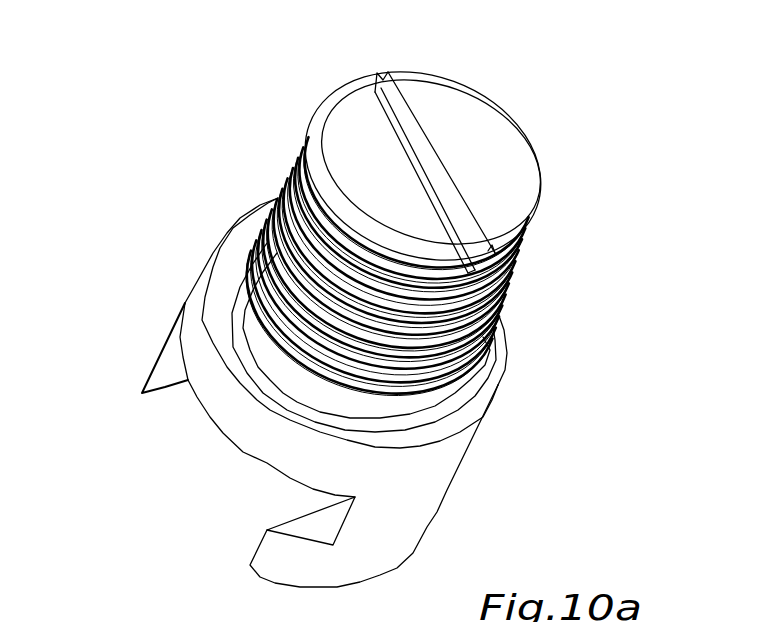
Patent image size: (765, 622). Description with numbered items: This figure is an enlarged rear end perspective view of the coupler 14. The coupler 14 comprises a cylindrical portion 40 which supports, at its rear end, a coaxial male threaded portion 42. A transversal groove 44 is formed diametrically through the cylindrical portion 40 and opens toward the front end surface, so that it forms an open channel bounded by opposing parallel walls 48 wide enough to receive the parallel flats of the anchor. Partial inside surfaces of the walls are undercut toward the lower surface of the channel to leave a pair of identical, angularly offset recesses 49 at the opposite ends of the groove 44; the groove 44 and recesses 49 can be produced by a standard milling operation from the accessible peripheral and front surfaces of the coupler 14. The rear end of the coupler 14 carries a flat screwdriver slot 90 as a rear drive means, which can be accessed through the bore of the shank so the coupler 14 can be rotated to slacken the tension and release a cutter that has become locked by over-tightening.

The coupler 14 is at (230, 234).
The cylindrical portion 40 is at (447, 490).
The male threaded portion 42 is at (507, 290).
The transversal groove 44 is at (230, 470).
The opposing parallel walls 48 is at (170, 372).
The recesses 49 is at (307, 520).
The flat screwdriver slot 90 is at (400, 98).